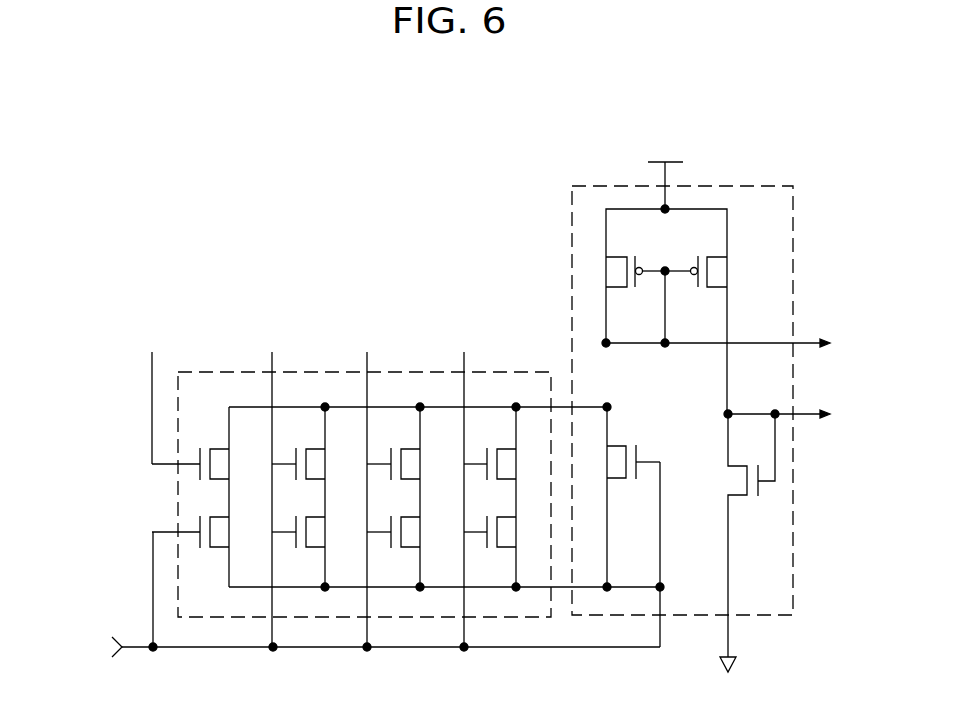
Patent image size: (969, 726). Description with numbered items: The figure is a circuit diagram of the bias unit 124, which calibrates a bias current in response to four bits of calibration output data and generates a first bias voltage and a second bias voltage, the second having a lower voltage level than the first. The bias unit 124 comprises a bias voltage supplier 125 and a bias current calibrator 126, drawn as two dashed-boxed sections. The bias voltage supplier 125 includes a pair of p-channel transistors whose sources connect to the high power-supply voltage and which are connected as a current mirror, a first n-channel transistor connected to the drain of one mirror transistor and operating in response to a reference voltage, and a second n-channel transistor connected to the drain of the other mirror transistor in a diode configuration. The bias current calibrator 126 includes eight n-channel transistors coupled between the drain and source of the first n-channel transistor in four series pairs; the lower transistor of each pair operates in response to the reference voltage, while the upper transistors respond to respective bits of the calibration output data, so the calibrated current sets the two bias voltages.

The bias unit 124 is at (409, 126).
The bias voltage supplier 125 is at (738, 186).
The bias current calibrator 126 is at (200, 372).